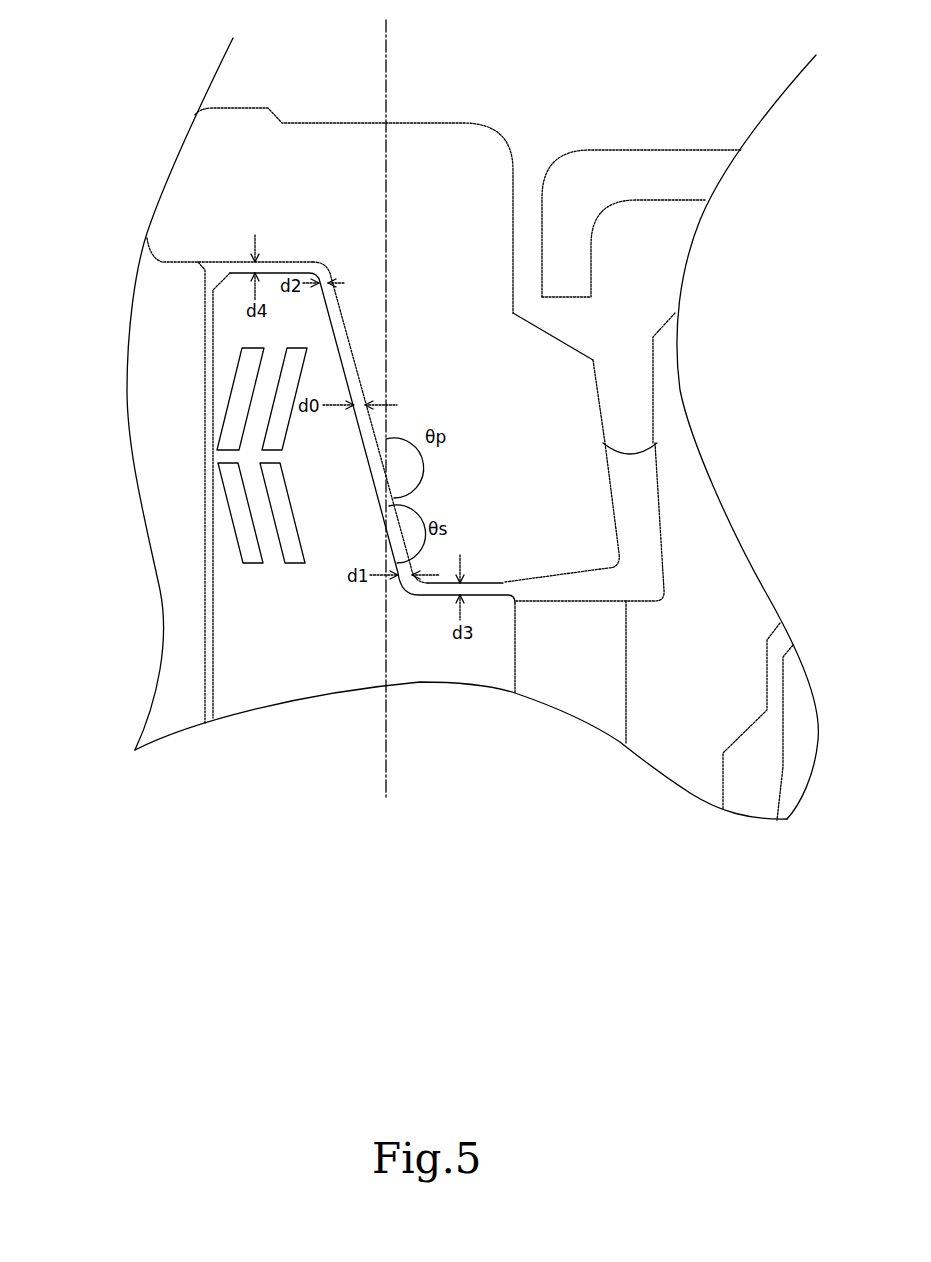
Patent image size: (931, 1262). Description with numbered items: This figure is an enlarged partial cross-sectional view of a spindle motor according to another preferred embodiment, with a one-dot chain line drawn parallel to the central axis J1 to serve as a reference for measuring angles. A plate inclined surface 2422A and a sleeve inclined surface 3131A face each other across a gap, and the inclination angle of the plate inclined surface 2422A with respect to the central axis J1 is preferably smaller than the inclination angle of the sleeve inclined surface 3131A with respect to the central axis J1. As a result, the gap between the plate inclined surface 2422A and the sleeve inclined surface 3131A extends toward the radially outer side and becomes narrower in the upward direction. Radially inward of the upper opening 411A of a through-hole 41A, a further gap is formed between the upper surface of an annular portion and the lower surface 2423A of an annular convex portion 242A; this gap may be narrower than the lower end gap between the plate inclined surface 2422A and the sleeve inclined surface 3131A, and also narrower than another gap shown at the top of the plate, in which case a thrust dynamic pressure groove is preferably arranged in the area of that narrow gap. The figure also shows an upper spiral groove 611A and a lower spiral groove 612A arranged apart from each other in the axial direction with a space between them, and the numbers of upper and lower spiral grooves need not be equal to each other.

The central axis J1 is at (386, 108).
The plate inclined surface 2422A is at (345, 335).
The upper spiral groove 611A is at (248, 375).
The lower spiral groove 612A is at (230, 488).
The sleeve inclined surface 3131A is at (373, 490).
The annular convex portion 242A is at (515, 430).
The lower surface of annular convex portion 2423A is at (483, 578).
The upper opening of through-hole 411A is at (607, 590).
The through-hole 41A is at (605, 660).